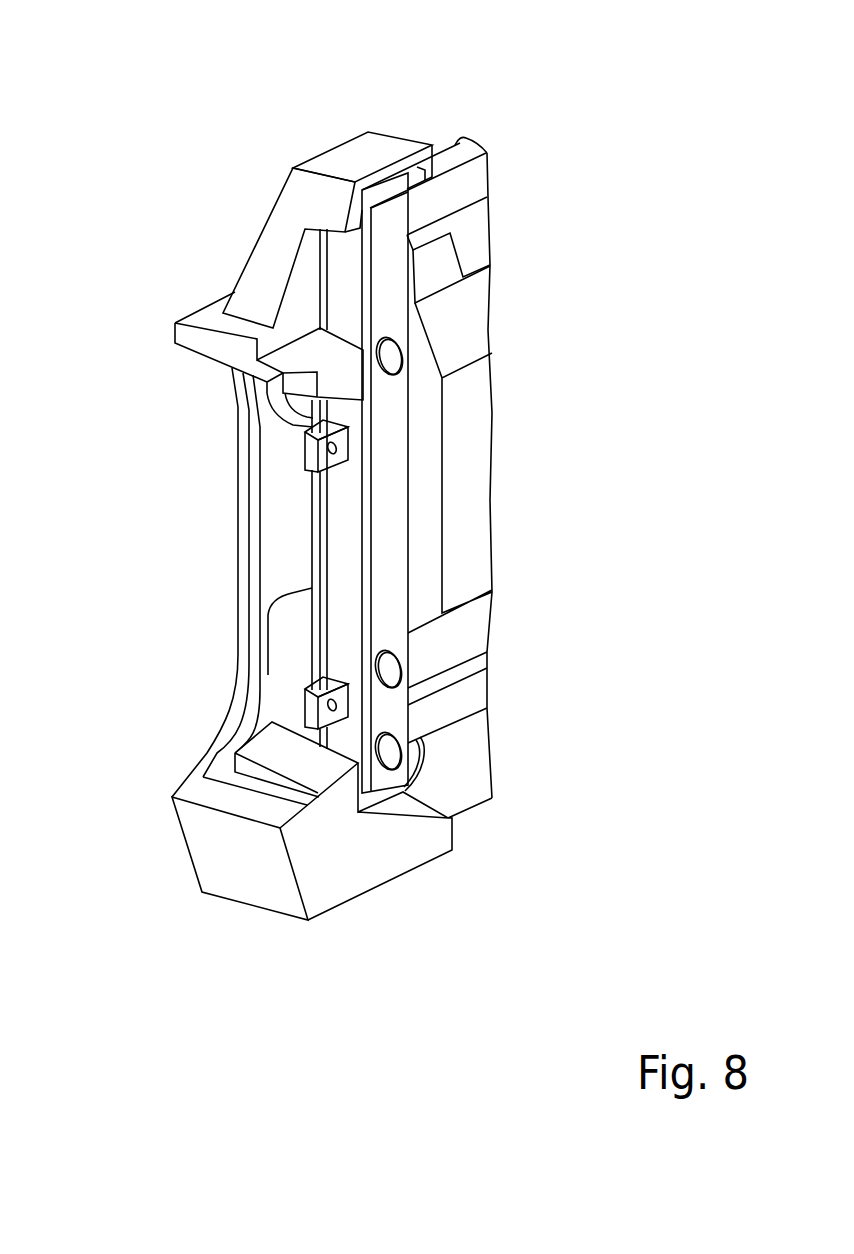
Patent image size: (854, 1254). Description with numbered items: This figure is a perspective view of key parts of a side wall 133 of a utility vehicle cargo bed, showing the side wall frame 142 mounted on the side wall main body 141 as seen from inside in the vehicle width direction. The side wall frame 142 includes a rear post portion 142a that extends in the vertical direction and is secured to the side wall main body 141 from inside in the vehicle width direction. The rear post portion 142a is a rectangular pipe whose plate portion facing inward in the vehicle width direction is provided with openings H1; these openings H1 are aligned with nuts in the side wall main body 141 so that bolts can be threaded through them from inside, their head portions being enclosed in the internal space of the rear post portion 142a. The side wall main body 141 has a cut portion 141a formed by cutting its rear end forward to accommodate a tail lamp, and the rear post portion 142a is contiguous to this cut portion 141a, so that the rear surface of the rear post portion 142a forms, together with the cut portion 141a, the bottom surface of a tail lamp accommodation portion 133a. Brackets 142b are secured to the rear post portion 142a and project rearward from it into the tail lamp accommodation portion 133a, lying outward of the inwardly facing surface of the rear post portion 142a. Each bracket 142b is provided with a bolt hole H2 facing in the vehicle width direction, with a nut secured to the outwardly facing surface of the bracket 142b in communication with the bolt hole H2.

The side wall 133 is at (456, 28).
The side wall main body 141 is at (348, 153).
The side wall frame 142 is at (450, 153).
The cut portion 141a is at (242, 505).
The tail lamp accommodation portion 133a is at (283, 577).
The rear post portion 142a is at (388, 523).
The bracket 142b is at (307, 436).
The opening H1 is at (392, 351).
The bolt hole H2 is at (348, 440).